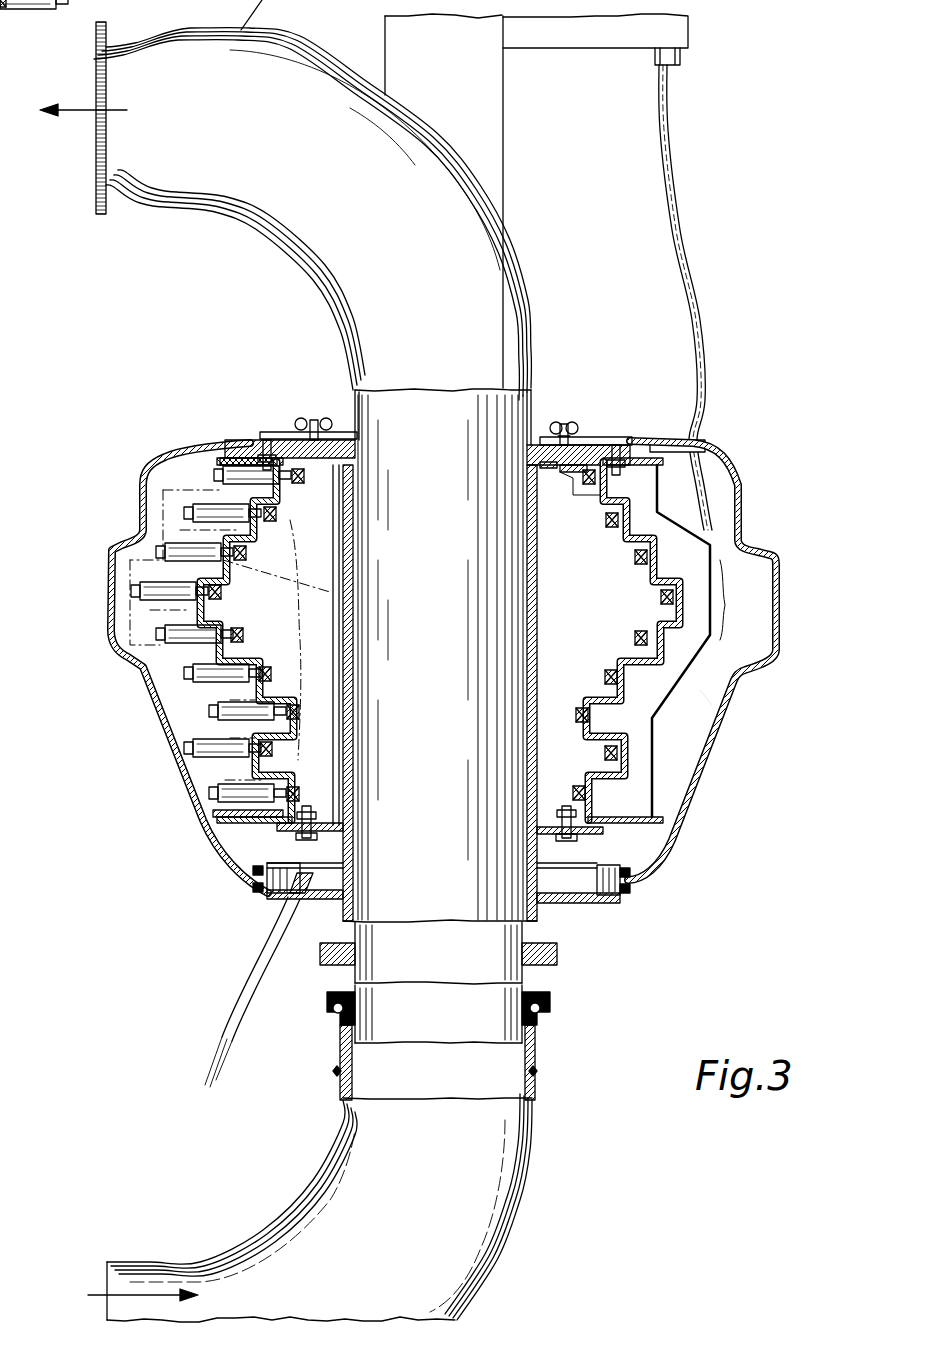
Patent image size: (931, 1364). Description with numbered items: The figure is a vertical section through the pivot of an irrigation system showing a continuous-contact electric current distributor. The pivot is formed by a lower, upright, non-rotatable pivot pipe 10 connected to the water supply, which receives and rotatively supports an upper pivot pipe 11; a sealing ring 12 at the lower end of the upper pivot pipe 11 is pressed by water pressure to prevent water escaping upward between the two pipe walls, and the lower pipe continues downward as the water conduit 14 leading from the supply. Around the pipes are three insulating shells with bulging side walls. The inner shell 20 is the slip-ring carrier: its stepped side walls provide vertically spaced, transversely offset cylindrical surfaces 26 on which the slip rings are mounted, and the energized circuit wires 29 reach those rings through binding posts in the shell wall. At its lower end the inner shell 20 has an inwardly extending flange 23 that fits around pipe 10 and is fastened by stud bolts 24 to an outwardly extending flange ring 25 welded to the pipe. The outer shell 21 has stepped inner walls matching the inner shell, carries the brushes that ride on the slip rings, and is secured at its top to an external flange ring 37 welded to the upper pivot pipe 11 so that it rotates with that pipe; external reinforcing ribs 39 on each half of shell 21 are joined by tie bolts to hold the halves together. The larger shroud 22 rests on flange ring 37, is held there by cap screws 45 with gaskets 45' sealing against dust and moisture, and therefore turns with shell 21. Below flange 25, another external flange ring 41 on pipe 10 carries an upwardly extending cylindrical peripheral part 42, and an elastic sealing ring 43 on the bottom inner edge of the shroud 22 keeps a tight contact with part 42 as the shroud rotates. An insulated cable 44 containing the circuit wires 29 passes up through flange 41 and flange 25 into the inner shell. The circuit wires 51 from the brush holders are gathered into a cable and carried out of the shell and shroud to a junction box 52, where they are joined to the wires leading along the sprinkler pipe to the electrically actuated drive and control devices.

The lower pivot pipe 10 is at (535, 655).
The upper pivot pipe 11 is at (505, 965).
The sealing ring 12 is at (553, 1012).
The outlet elbow pipe 14 is at (510, 1185).
The inner shell 20 is at (623, 580).
The outer shell 21 is at (702, 588).
The shroud 22 is at (743, 517).
The inwardly extending flange 23 is at (556, 814).
The stud bolts 24 is at (565, 841).
The flange ring 25 is at (602, 830).
The cylindrical surfaces 26 is at (628, 553).
The circuit wires 29 is at (322, 705).
The flange ring 37 is at (618, 440).
The reinforcing ribs 39 is at (677, 703).
The flange ring 41 is at (605, 903).
The cylindrical peripheral part 42 is at (622, 868).
The sealing ring 43 is at (630, 887).
The insulated cable 44 is at (247, 967).
The cap screws 45 is at (587, 410).
The gaskets 45' is at (590, 421).
The circuit wires 51 is at (707, 482).
The junction box 52 is at (690, 33).